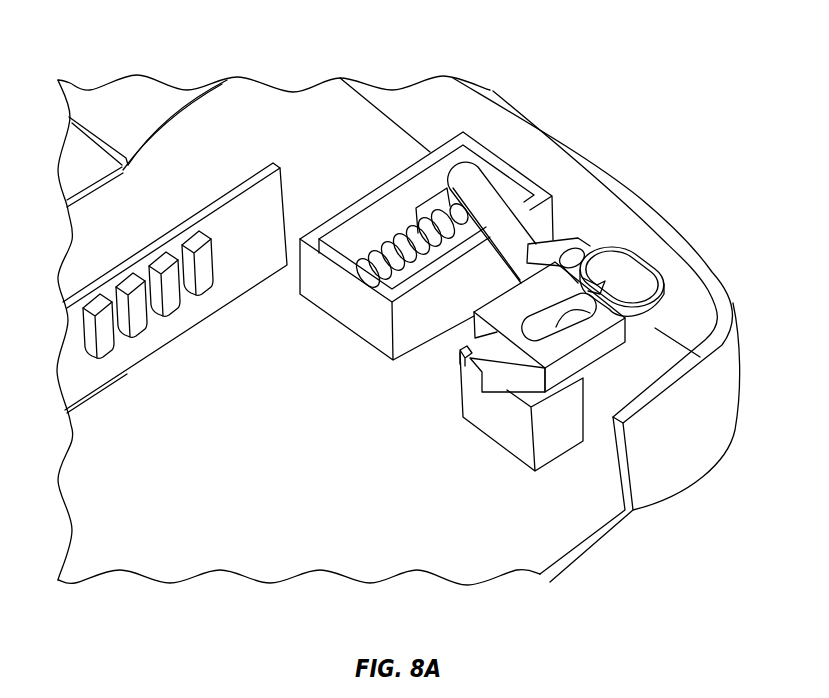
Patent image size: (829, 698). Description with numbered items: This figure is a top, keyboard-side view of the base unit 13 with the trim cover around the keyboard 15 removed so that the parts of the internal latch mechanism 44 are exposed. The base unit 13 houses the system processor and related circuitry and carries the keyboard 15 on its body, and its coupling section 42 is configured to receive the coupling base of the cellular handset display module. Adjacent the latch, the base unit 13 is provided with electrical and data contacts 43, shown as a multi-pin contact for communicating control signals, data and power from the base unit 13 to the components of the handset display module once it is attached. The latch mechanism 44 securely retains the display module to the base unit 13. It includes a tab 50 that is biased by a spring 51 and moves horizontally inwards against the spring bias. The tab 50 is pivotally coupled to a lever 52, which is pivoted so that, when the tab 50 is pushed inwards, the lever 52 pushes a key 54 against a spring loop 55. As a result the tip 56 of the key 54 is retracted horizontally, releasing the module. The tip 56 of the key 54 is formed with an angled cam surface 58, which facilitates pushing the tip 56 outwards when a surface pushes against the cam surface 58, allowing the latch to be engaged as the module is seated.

The base unit 13 is at (389, 596).
The keyboard 15 is at (147, 90).
The coupling section 42 is at (208, 503).
The electrical and data contacts 43 is at (200, 236).
The latch mechanism 44 is at (686, 216).
The tab 50 is at (427, 205).
The spring 51 is at (360, 275).
The lever 52 is at (476, 191).
The key 54 is at (588, 355).
The spring loop 55 is at (622, 258).
The tip of the key 56 is at (465, 372).
The angled cam surface 58 is at (512, 442).